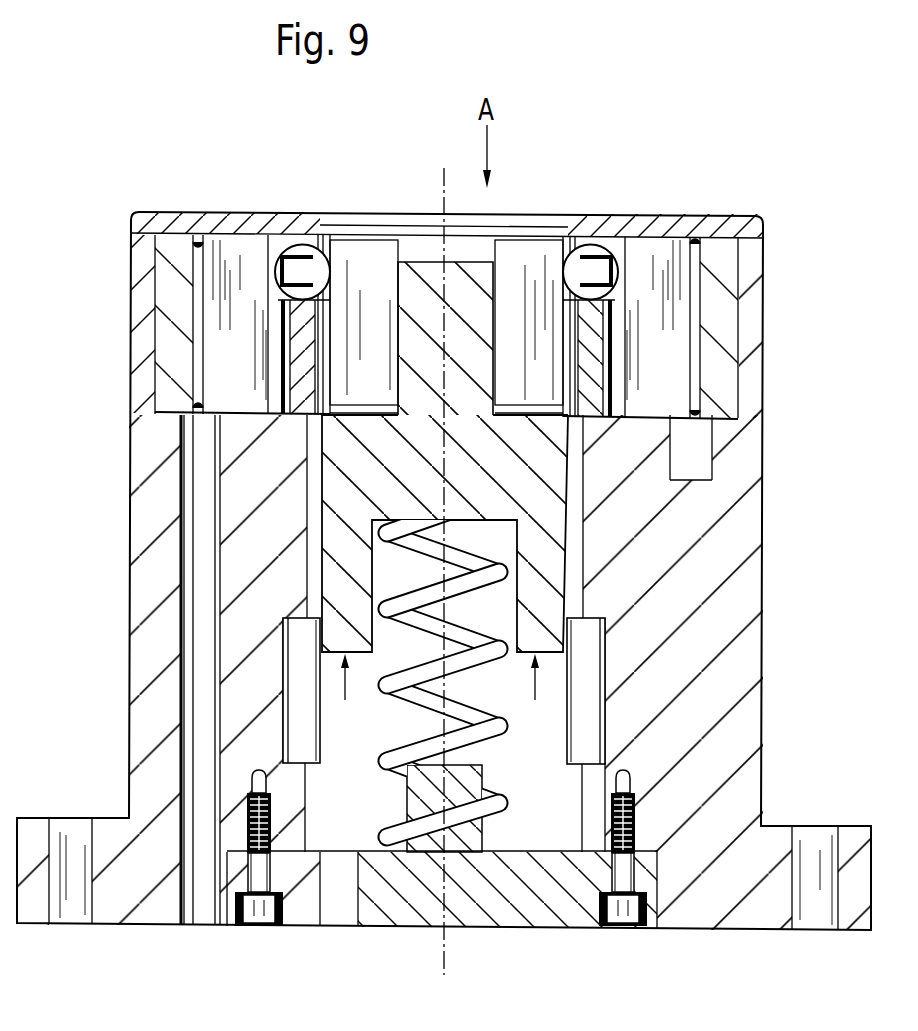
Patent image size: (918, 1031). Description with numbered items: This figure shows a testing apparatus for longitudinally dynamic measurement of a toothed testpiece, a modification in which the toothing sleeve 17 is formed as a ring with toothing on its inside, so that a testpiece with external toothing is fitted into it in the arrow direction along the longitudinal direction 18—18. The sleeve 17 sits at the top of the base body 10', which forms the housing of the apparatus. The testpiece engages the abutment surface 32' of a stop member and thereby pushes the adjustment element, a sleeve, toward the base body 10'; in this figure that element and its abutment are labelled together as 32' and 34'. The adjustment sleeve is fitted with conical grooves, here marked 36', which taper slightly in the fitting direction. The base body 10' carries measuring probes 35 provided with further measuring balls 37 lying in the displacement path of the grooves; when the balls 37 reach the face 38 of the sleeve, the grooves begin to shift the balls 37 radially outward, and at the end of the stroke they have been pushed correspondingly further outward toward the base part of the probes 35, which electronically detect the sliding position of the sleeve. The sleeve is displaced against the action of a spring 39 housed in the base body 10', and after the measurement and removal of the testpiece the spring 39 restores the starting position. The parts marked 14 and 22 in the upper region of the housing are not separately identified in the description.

The base body 10' is at (444, 599).
The retaining ring 14 is at (318, 262).
The toothing sleeve 17 is at (592, 357).
The longitudinal direction 18 is at (441, 574).
The sealing sleeve 22 is at (238, 258).
The abutment surface 32' is at (411, 284).
The piston head 34' is at (531, 287).
The measuring probes 35 is at (292, 626).
The piston 36' is at (440, 533).
The further measuring balls 37 is at (322, 636).
The face of the sleeve 38 is at (438, 698).
The spring 39 is at (498, 570).